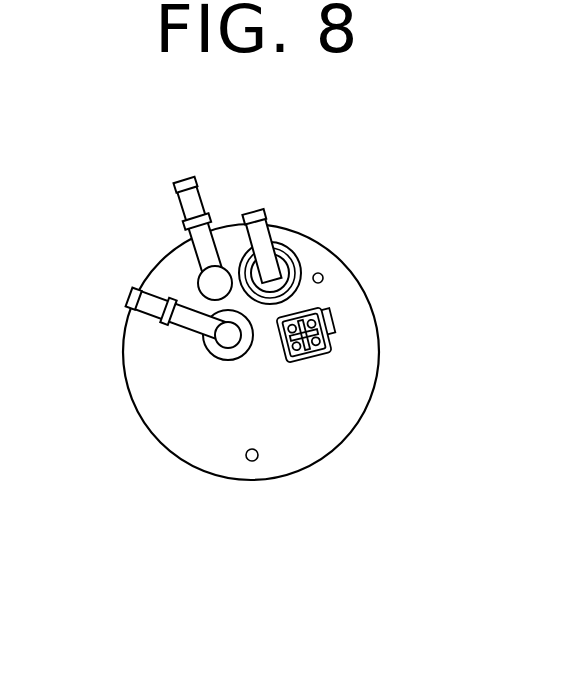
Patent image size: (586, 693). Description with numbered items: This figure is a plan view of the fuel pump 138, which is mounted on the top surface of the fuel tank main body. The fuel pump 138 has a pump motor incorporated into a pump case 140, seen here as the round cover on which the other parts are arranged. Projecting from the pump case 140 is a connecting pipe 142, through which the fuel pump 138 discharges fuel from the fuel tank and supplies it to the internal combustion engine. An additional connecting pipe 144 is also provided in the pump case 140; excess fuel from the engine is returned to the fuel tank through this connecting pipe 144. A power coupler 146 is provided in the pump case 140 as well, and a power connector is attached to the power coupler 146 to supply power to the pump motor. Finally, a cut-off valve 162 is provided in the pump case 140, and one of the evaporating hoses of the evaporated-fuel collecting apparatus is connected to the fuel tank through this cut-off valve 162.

The fuel pump 138 is at (259, 328).
The pump case 140 is at (148, 406).
The connecting pipe 142 is at (182, 201).
The additional connecting pipe 144 is at (138, 312).
The power coupler 146 is at (332, 352).
The cut-off valve 162 is at (291, 256).